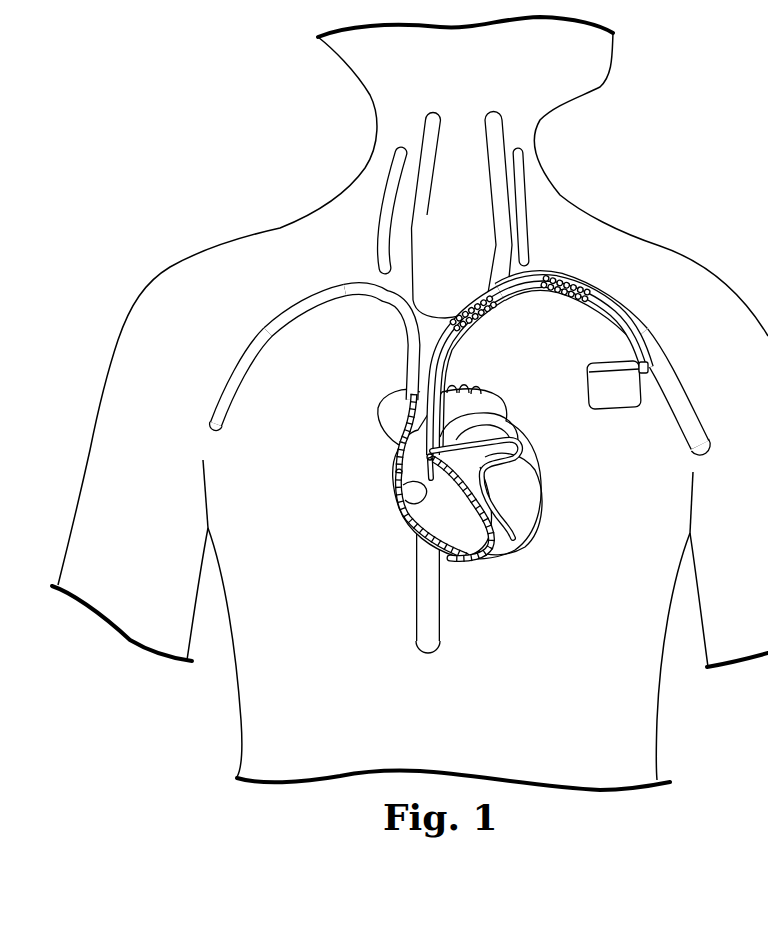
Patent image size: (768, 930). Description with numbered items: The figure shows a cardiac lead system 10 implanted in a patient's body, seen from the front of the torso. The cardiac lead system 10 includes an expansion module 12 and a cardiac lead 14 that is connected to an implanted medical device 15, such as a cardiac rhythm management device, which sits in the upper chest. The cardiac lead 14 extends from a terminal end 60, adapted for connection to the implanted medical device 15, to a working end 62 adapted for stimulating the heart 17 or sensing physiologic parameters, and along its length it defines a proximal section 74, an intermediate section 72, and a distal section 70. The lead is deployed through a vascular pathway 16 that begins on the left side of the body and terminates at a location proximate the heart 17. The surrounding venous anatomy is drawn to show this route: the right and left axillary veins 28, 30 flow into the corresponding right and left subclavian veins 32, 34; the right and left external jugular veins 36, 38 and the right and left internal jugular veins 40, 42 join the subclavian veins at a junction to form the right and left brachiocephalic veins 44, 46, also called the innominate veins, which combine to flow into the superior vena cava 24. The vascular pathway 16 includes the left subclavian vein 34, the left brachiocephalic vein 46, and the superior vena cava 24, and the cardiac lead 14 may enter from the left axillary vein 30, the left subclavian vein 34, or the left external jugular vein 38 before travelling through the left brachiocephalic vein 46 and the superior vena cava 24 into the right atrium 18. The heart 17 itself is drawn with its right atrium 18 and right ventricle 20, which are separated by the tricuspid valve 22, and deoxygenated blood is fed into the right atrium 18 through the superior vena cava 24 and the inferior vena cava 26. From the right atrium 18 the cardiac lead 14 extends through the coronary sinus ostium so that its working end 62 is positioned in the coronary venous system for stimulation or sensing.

The cardiac lead system 10 is at (620, 275).
The expansion module 12 is at (452, 305).
The cardiac lead 14 is at (622, 317).
The implanted medical device 15 is at (623, 428).
The vascular pathway 16 is at (400, 352).
The heart 17 is at (540, 578).
The right atrium 18 is at (398, 451).
The right ventricle 20 is at (463, 540).
The tricuspid valve 22 is at (422, 503).
The superior vena cava 24 is at (408, 389).
The inferior vena cava 26 is at (417, 600).
The right axillary vein 28 is at (209, 407).
The left axillary vein 30 is at (706, 441).
The right subclavian vein 32 is at (300, 300).
The left subclavian vein 34 is at (547, 272).
The right external jugular vein 36 is at (435, 182).
The left external jugular vein 38 is at (495, 214).
The right internal jugular vein 40 is at (392, 189).
The left internal jugular vein 42 is at (531, 218).
The right brachiocephalic vein 44 is at (402, 303).
The left brachiocephalic vein 46 is at (492, 289).
The terminal end 60 is at (641, 377).
The working end 62 is at (513, 443).
The distal section 70 is at (460, 420).
The intermediate section 72 is at (523, 292).
The proximal section 74 is at (637, 331).